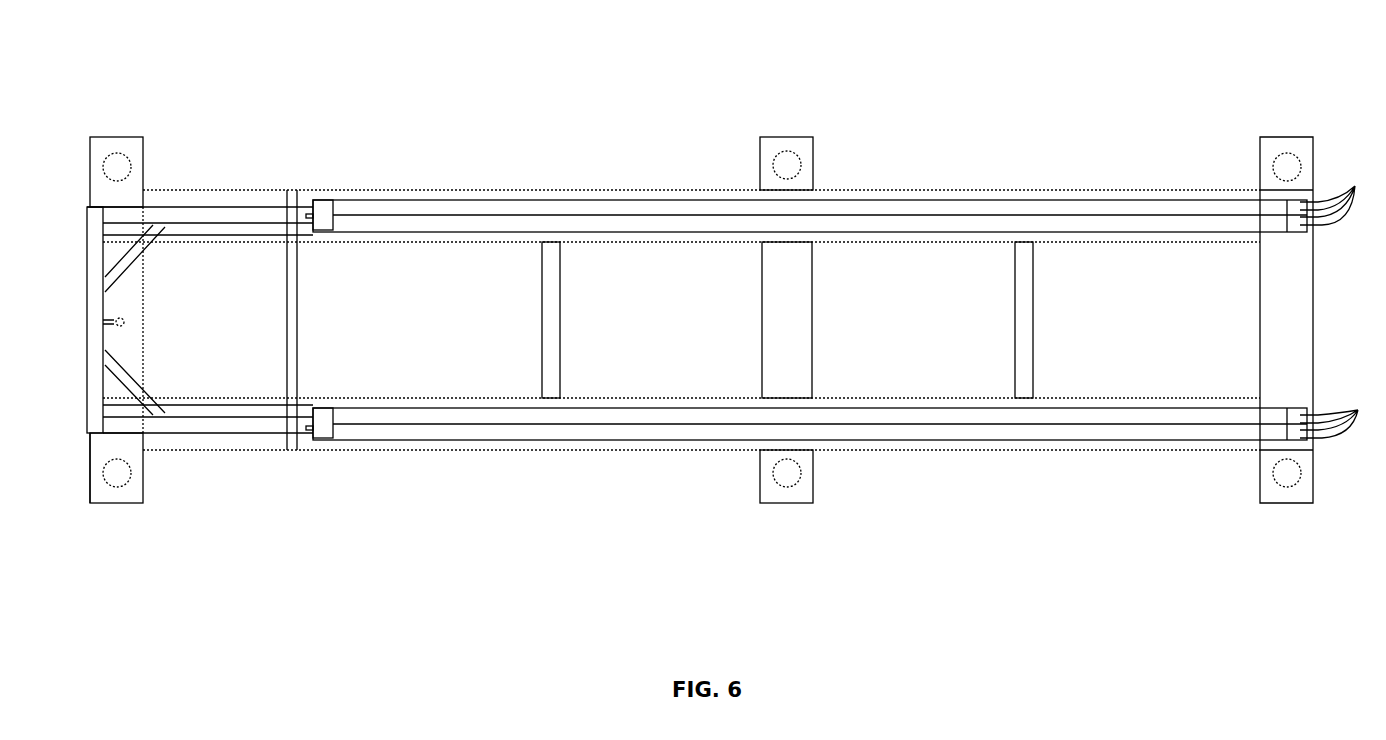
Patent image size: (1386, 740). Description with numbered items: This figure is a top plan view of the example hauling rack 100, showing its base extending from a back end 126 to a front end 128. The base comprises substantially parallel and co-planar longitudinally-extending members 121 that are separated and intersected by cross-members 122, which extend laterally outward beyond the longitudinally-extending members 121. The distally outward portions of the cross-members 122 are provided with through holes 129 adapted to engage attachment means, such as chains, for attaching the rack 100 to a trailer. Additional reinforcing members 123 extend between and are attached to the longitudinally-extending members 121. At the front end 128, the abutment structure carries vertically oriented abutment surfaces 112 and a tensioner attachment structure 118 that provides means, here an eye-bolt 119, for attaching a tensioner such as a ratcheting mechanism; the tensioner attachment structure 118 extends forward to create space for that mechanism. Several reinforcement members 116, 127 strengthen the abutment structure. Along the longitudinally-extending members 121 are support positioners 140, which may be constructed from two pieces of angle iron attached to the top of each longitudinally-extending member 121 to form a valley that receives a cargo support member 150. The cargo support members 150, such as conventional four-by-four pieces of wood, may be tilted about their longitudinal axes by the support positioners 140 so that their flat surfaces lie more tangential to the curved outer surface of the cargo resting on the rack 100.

The rack 100 is at (636, 68).
The abutment surface 112 is at (323, 210).
The reinforcement member 116 is at (146, 246).
The tensioner attachment structure 118 is at (216, 213).
The eye-bolt 119 is at (124, 326).
The longitudinally-extending member 121 is at (183, 200).
The cross-member 122 is at (100, 147).
The reinforcing member 123 is at (553, 322).
The back end 126 is at (1320, 348).
The reinforcement member 127 is at (297, 320).
The front end 128 is at (95, 486).
The through hole 129 is at (130, 158).
The support positioner 140 is at (1339, 300).
The cargo support member 150 is at (1065, 205).